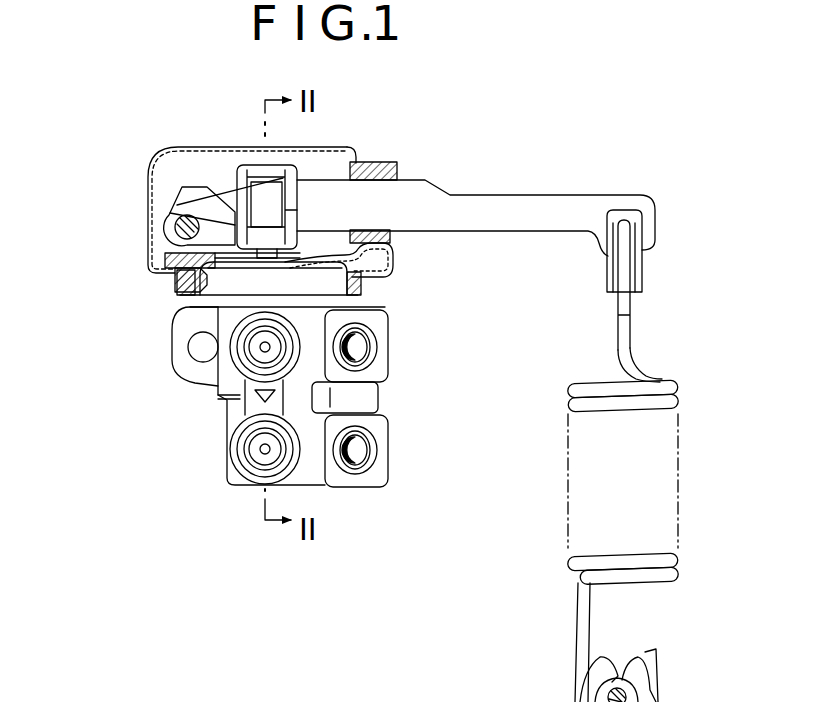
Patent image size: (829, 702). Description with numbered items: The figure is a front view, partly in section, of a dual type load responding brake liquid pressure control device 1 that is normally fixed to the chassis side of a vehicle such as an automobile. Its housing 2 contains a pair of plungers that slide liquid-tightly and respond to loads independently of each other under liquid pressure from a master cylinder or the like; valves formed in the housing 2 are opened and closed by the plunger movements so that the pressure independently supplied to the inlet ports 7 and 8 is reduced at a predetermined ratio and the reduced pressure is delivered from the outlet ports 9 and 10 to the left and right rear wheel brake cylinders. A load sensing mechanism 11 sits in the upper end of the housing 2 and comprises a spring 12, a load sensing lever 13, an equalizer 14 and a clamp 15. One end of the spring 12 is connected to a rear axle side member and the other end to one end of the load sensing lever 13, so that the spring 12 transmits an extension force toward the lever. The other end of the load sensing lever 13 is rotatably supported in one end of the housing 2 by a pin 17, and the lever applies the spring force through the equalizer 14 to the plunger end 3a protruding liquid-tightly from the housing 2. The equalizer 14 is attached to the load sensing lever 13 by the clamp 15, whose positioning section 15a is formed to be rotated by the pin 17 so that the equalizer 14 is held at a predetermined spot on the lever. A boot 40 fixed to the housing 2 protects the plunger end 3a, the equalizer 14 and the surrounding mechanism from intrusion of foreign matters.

The load responding brake liquid pressure control device 1 is at (393, 122).
The housing 2 is at (186, 297).
The plunger end 3a is at (372, 268).
The inlet port 7 is at (263, 349).
The inlet port 8 is at (355, 348).
The outlet port 9 is at (263, 450).
The outlet port 10 is at (355, 449).
The load sensing mechanism 11 is at (415, 172).
The spring 12 is at (680, 500).
The load sensing lever 13 is at (443, 218).
The equalizer 14 is at (260, 215).
The clamp 15 is at (238, 215).
The positioning section 15a is at (168, 212).
The pin 17 is at (175, 228).
The boot 40 is at (166, 150).